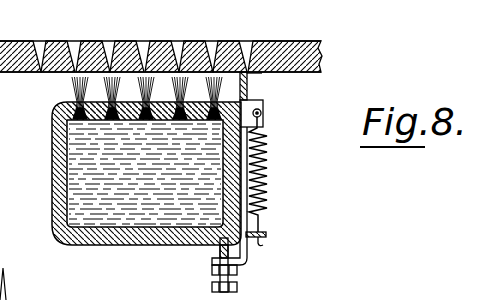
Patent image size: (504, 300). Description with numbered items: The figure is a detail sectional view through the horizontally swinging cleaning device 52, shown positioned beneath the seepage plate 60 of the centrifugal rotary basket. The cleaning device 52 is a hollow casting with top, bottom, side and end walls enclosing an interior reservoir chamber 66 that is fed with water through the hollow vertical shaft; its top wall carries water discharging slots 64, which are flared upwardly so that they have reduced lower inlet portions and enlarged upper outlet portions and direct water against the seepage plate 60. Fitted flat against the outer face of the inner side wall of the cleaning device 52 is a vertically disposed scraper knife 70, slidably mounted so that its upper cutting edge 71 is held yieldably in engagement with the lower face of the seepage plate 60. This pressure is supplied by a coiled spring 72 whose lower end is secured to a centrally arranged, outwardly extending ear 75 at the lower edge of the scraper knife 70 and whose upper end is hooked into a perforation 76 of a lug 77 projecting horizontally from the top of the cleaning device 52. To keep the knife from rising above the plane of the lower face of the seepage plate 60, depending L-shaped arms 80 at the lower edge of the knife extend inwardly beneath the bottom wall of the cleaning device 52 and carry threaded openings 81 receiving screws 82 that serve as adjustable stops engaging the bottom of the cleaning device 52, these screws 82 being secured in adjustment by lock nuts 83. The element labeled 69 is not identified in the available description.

The cleaning device 52 is at (53, 160).
The seepage plate 60 is at (161, 42).
The water discharging slots 64 is at (56, 113).
The reservoir chamber 66 is at (103, 172).
The belt tooth 69 is at (172, 40).
The scraper knife 70 is at (250, 89).
The upper cutting edge 71 is at (249, 75).
The coiled spring 72 is at (270, 172).
The ear 75 is at (262, 239).
The perforation 76 is at (261, 117).
The lug 77 is at (265, 107).
The L-shaped arms 80 is at (250, 264).
The threaded openings 81 is at (210, 263).
The screws 82 is at (218, 246).
The lock nuts 83 is at (211, 283).